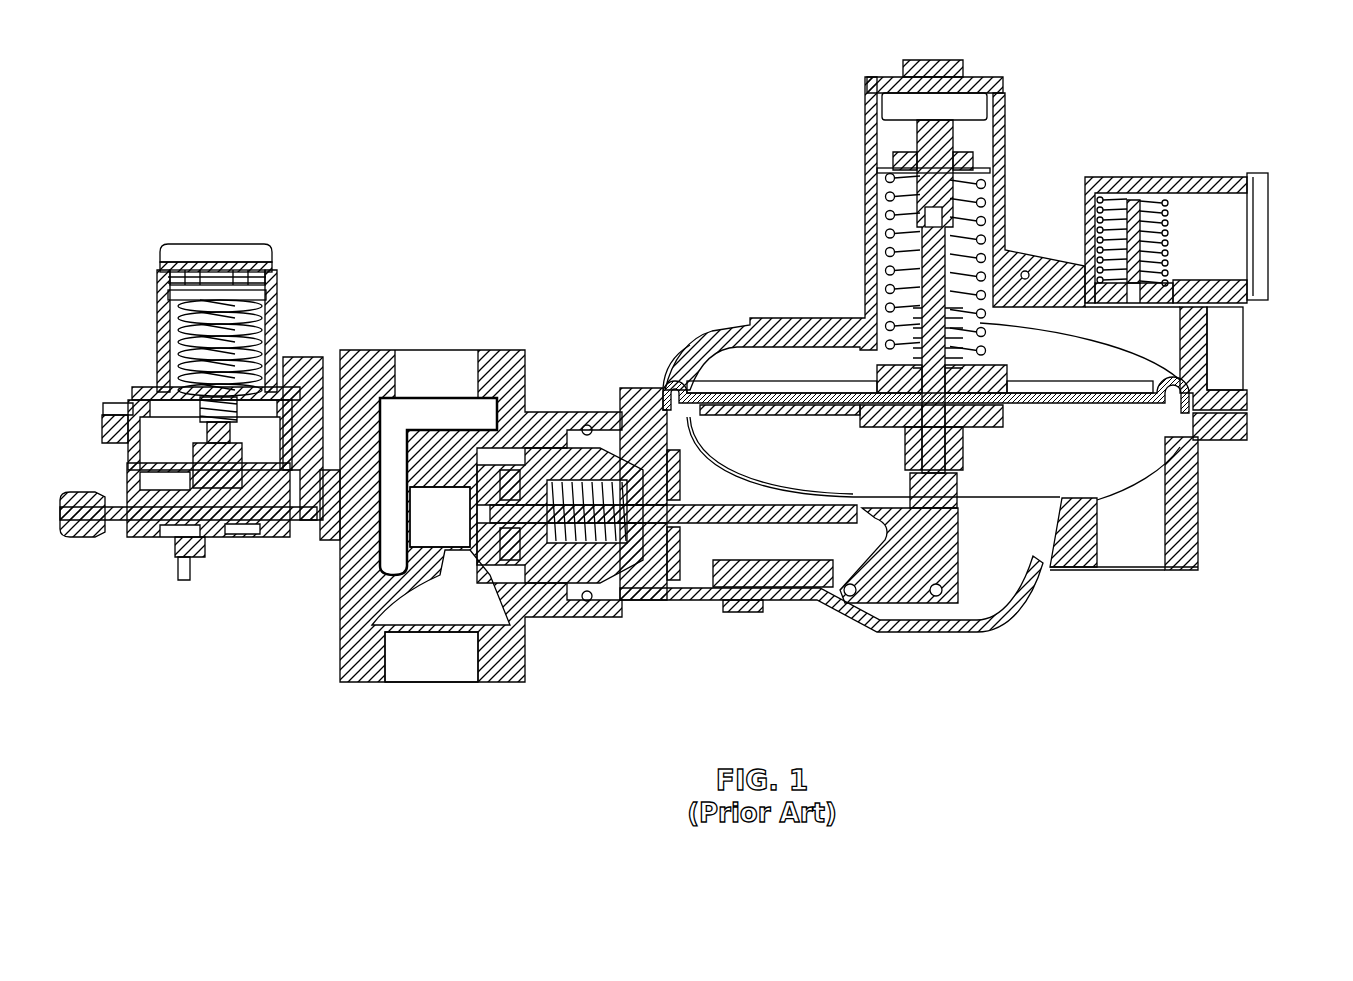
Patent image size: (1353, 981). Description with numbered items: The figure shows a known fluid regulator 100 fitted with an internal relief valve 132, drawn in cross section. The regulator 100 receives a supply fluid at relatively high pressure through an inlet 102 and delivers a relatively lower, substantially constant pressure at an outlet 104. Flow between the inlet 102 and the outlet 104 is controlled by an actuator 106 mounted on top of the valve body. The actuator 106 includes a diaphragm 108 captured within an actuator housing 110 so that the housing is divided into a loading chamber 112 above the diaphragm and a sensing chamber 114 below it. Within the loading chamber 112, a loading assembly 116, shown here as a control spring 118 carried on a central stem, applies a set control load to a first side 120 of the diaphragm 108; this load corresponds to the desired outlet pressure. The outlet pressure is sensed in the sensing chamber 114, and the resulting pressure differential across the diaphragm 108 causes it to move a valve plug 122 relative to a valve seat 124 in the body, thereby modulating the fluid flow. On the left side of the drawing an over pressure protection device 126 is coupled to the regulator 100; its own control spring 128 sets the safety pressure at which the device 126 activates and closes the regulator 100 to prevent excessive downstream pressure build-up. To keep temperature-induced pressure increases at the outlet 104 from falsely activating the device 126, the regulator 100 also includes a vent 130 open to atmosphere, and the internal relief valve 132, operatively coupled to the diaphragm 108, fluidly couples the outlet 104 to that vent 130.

The fluid regulator 100 is at (512, 106).
The inlet 102 is at (460, 350).
The outlet 104 is at (415, 683).
The actuator 106 is at (840, 180).
The diaphragm 108 is at (1200, 398).
The actuator housing 110 is at (817, 318).
The loading chamber 112 is at (788, 360).
The sensing chamber 114 is at (1125, 448).
The loading assembly 116 is at (885, 152).
The control spring 118 is at (975, 232).
The first side 120 is at (736, 383).
The valve plug 122 is at (490, 535).
The valve seat 124 is at (455, 528).
The over pressure protection device 126 is at (202, 226).
The control spring 128 is at (268, 322).
The vent 130 is at (1232, 235).
The internal relief valve 132 is at (875, 360).